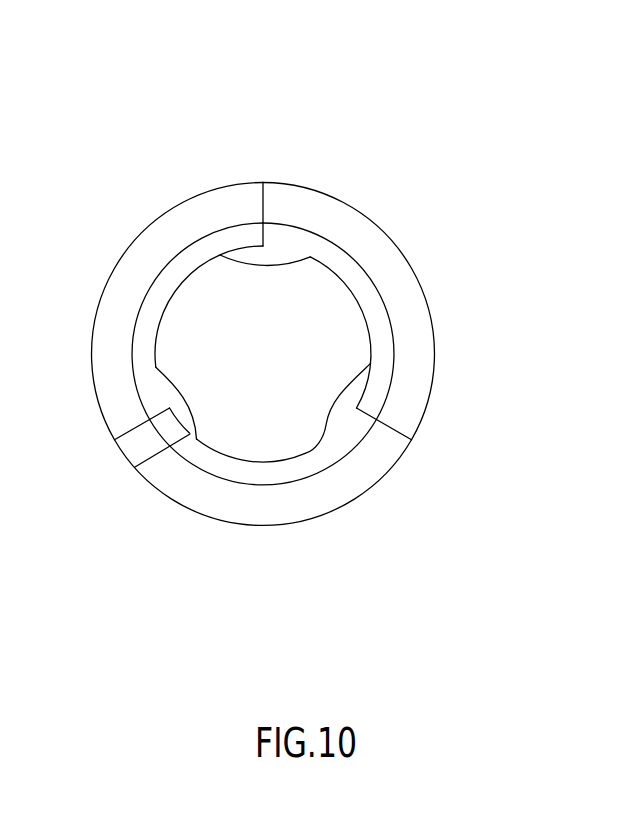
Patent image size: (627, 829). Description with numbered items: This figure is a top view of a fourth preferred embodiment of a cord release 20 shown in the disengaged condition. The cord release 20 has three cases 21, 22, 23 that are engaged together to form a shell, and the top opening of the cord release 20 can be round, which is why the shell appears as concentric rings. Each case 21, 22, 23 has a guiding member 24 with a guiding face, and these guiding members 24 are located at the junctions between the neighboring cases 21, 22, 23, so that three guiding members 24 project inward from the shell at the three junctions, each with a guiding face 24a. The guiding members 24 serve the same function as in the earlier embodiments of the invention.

The cord release 20 is at (535, 130).
The case 21 is at (382, 248).
The case 22 is at (205, 207).
The case 23 is at (290, 508).
The guiding member 24 is at (136, 464).
The abutting surface of protrusion 24a is at (157, 327).